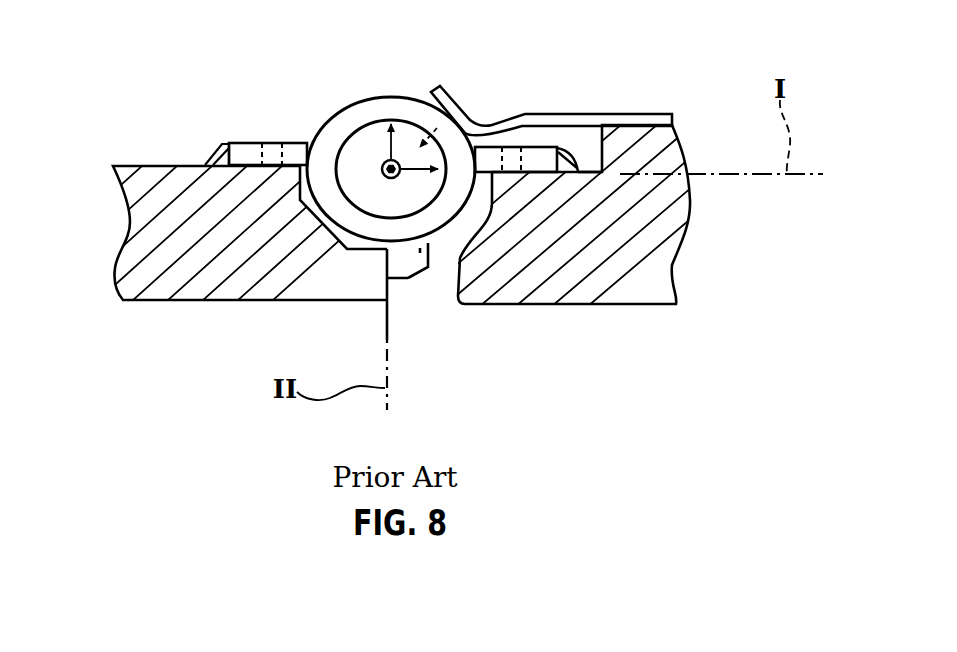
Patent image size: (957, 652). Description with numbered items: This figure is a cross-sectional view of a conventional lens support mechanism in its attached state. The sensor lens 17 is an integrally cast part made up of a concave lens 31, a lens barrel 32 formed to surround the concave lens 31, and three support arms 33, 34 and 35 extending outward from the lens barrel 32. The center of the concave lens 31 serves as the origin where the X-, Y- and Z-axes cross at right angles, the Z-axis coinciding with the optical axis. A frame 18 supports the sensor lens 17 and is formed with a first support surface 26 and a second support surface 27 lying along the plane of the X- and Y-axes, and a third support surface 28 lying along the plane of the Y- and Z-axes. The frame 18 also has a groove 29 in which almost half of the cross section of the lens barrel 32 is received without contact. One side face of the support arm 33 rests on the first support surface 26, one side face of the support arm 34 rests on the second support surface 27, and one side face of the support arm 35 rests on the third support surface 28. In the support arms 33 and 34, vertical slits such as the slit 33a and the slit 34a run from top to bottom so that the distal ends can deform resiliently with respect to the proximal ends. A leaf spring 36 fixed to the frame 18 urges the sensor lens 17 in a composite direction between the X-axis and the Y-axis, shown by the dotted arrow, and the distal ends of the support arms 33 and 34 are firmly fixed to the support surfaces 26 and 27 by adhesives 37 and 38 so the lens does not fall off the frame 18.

The sensor lens 17 is at (410, 86).
The frame 18 is at (652, 300).
The first support surface 26 is at (148, 167).
The second support surface 27 is at (594, 173).
The third support surface 28 is at (391, 279).
The groove 29 is at (458, 230).
The concave lens 31 is at (346, 153).
The lens barrel 32 is at (370, 100).
The support arm 33 is at (225, 143).
The vertical slit 33a is at (275, 143).
The support arm 34 is at (556, 147).
The screw 34a is at (513, 147).
The support arm 35 is at (409, 270).
The leaf spring 36 is at (461, 113).
The adhesive 37 is at (148, 167).
The adhesive 38 is at (575, 150).